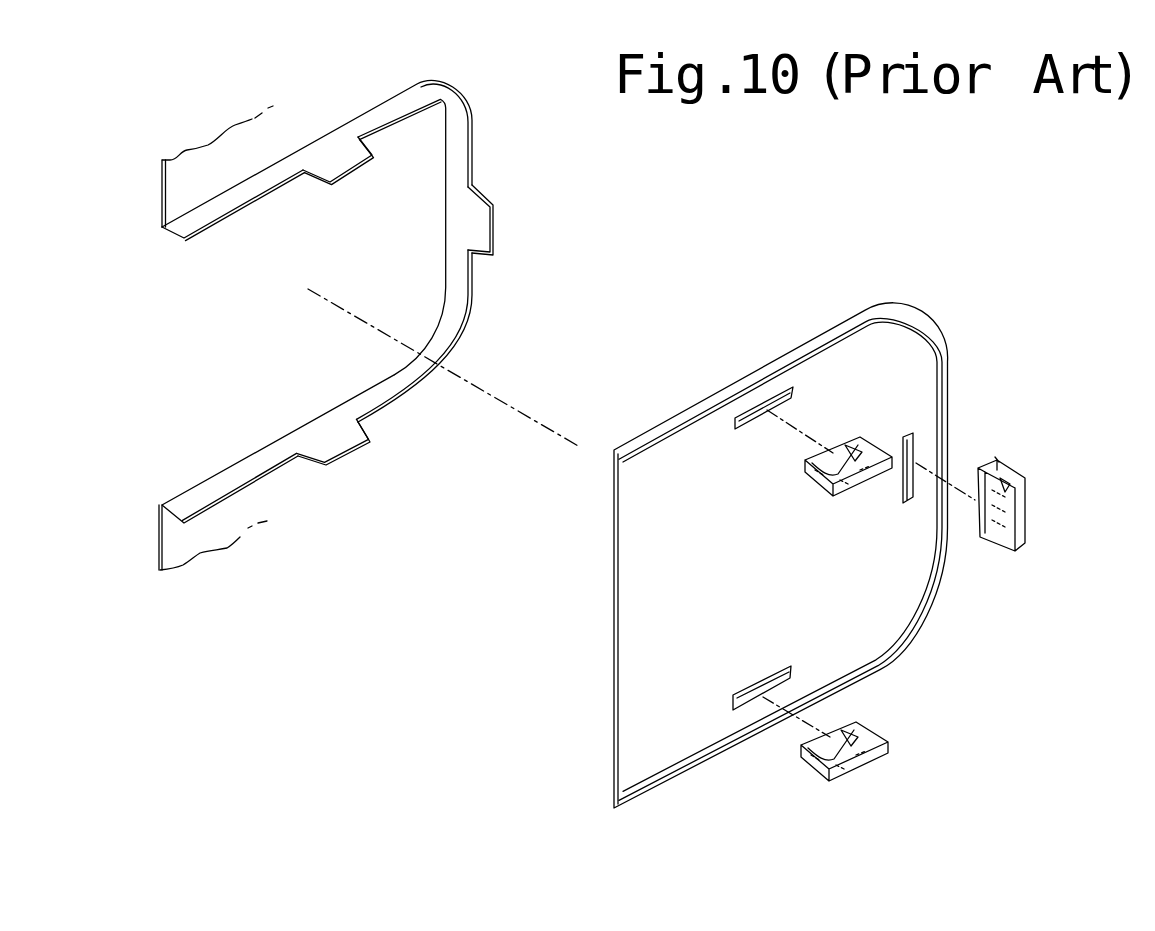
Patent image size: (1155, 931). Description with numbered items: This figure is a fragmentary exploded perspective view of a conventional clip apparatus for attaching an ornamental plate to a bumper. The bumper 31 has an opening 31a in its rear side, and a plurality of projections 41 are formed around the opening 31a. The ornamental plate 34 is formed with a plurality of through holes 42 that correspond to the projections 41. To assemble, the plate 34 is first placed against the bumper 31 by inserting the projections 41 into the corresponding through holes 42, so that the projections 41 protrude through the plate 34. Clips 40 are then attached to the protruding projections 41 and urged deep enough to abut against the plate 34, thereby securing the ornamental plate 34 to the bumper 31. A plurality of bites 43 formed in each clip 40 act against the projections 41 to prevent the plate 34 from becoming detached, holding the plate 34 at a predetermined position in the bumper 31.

The bumper 31 is at (374, 325).
The opening 31a is at (303, 435).
The projections 41 is at (357, 166).
The ornamental plate 34 is at (850, 574).
The through holes 42 is at (743, 423).
The clips 40 is at (867, 483).
The bites 43 is at (847, 500).